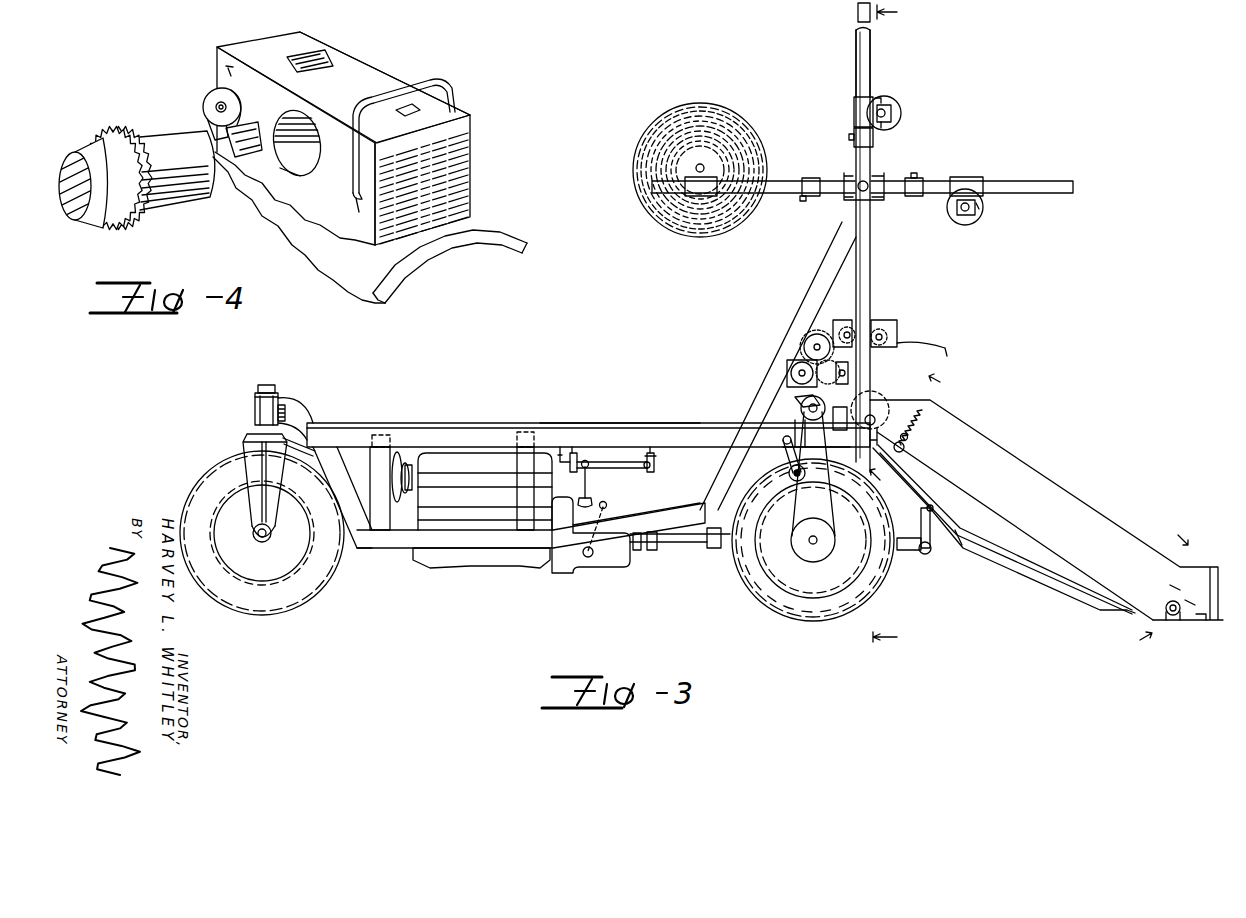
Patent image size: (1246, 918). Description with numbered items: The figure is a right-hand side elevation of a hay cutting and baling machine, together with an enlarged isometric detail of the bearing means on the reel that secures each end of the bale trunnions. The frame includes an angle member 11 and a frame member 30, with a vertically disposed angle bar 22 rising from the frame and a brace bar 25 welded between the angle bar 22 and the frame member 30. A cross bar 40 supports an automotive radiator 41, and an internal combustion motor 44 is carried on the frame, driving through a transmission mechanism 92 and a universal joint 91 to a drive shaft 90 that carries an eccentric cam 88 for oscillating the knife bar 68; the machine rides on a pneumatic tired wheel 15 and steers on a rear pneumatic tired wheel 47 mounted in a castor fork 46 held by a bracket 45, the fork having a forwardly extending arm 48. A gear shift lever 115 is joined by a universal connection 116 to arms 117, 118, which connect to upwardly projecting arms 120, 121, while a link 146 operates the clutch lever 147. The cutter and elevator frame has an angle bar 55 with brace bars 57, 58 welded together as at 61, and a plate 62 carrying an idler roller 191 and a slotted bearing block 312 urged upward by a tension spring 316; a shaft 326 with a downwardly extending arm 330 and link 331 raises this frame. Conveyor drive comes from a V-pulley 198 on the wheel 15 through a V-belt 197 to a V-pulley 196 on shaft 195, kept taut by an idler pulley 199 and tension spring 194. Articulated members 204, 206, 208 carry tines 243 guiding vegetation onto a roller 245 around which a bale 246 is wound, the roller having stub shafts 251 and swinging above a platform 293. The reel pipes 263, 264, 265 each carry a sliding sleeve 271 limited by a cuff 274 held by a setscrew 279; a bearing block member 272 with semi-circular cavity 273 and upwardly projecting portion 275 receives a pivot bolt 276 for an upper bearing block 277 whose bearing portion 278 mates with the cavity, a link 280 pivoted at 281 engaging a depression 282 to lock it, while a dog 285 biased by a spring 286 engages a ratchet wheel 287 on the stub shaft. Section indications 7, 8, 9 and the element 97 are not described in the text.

In FIG. 3, the section line 7- 7 is at (886, 325).
In FIG. 3, the section line 8- 8 is at (912, 434).
In FIG. 3, the section line 9- 9 is at (1154, 583).
In FIG. 3, the angle member 11 is at (470, 530).
In FIG. 3, the pneumatic tired wheel 15 is at (757, 593).
In FIG. 3, the vertically disposed angle bar 22 is at (871, 268).
In FIG. 3, the brace bar 25 is at (826, 257).
In FIG. 3, the frame member 30 is at (556, 428).
In FIG. 3, the cross bar 40 is at (386, 545).
In FIG. 3, the automotive radiator 41 is at (382, 452).
In FIG. 3, the internal combustion motor 44 is at (485, 491).
In FIG. 3, the bracket 45 is at (300, 404).
In FIG. 3, the castor fork 46 is at (251, 448).
In FIG. 3, the pneumatic tired wheel 47 is at (322, 582).
In FIG. 3, the arm 48 is at (303, 456).
In FIG. 3, the angle bar 55 is at (1050, 541).
In FIG. 3, the brace bar 57 is at (1058, 592).
In FIG. 3, the brace bar 58 is at (952, 530).
In FIG. 3, the welded joint 61 is at (962, 549).
In FIG. 3, the plate 62 is at (1043, 475).
In FIG. 3, the knife bar 68 is at (1195, 623).
In FIG. 3, the eccentric cam 88 is at (713, 549).
In FIG. 3, the drive shaft 90 is at (690, 543).
In FIG. 3, the universal joint 91 is at (650, 551).
In FIG. 3, the transmission mechanism 92 is at (613, 566).
In FIG. 3, the rear upright post 97 is at (518, 472).
In FIG. 3, the gear shift lever 115 is at (588, 482).
In FIG. 3, the universal connection 116 is at (594, 460).
In FIG. 3, the arm 117 is at (647, 468).
In FIG. 3, the arm 118 is at (580, 467).
In FIG. 3, the upwardly projecting arm 120 is at (652, 456).
In FIG. 3, the upwardly projecting arm 121 is at (568, 445).
In FIG. 3, the link 146 is at (638, 505).
In FIG. 3, the clutch lever 147 is at (606, 512).
In FIG. 3, the roller 191 is at (877, 393).
In FIG. 3, the tension spring 194 is at (823, 477).
In FIG. 3, the shaft 195 is at (802, 411).
In FIG. 3, the V-pulley 196 is at (795, 397).
In FIG. 3, the V-belt 197 is at (833, 556).
In FIG. 3, the V-pulley 198 is at (803, 547).
In FIG. 3, the idler pulley 199 is at (789, 478).
In FIG. 3, the member 204 is at (787, 372).
In FIG. 3, the member 206 is at (826, 322).
In FIG. 3, the member 208 is at (896, 320).
In FIG. 3, the tine 243 is at (944, 347).
In FIG. 3, the roller 245 is at (902, 114).
In FIG. 3, the bale 246 is at (667, 113).
In FIG. 4, the stub shaft 251 is at (173, 198).
In FIG. 3, the pipe 263 is at (790, 180).
In FIG. 3, the pipe 264 is at (871, 67).
In FIG. 3, the pipe 265 is at (1040, 182).
In FIG. 4, the sleeve 271 is at (394, 293).
In FIG. 3, the sleeve 271 is at (854, 109).
In FIG. 4, the bearing block member 272 is at (468, 198).
In FIG. 3, the bearing block member 272 is at (876, 98).
In FIG. 4, the semi-circular cavity 273 is at (303, 170).
In FIG. 3, the cuff 274 is at (874, 140).
In FIG. 4, the upwardly projecting portion 275 is at (271, 48).
In FIG. 4, the pivot bolt 276 is at (217, 105).
In FIG. 4, the upper bearing block 277 is at (370, 72).
In FIG. 3, the upper bearing block 277 is at (889, 123).
In FIG. 4, the semi-circular bearing portion 278 is at (288, 117).
In FIG. 3, the setscrew 279 is at (849, 137).
In FIG. 4, the link 280 is at (436, 80).
In FIG. 4, the pivot 281 is at (355, 200).
In FIG. 4, the depression 282 is at (405, 110).
In FIG. 4, the dog 285 is at (206, 117).
In FIG. 4, the spring 286 is at (226, 68).
In FIG. 4, the ratchet wheel 287 is at (130, 224).
In FIG. 3, the platform 293 is at (470, 423).
In FIG. 3, the bearing block 312 is at (905, 447).
In FIG. 3, the tension spring 316 is at (920, 420).
In FIG. 3, the shaft 326 is at (926, 510).
In FIG. 3, the downwardly extending arm 330 is at (928, 553).
In FIG. 3, the link 331 is at (907, 551).